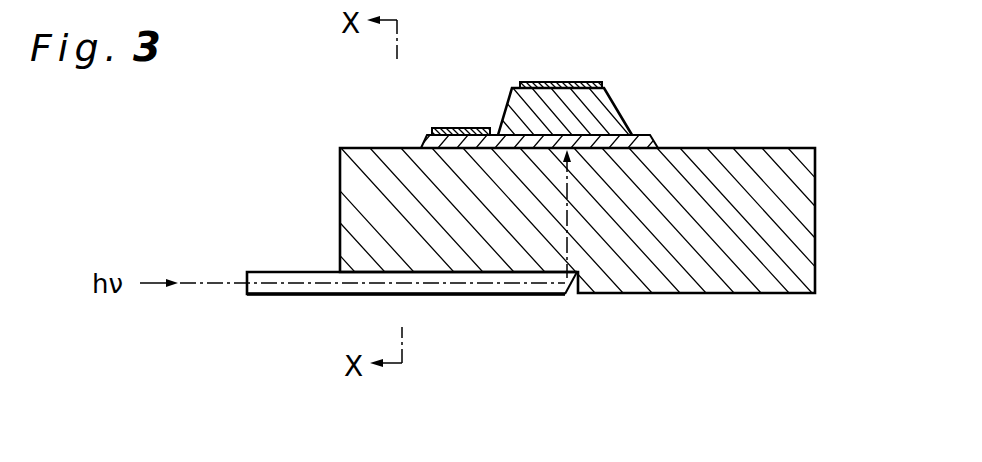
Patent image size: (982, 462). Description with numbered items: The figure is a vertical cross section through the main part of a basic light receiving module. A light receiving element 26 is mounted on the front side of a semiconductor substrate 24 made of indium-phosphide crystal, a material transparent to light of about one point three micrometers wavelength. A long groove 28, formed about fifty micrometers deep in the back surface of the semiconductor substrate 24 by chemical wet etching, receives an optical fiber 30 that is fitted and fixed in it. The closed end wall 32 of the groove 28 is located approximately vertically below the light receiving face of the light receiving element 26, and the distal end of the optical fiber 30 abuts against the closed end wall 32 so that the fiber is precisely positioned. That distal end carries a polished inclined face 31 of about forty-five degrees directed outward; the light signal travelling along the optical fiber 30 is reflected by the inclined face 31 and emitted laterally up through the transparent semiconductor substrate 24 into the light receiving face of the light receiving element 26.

The semiconductor substrate 24 is at (815, 232).
The light receiving element 26 is at (632, 100).
The groove 28 is at (470, 272).
The optical fiber 30 is at (317, 296).
The inclined face 31 is at (568, 296).
The closed end wall 32 is at (577, 298).